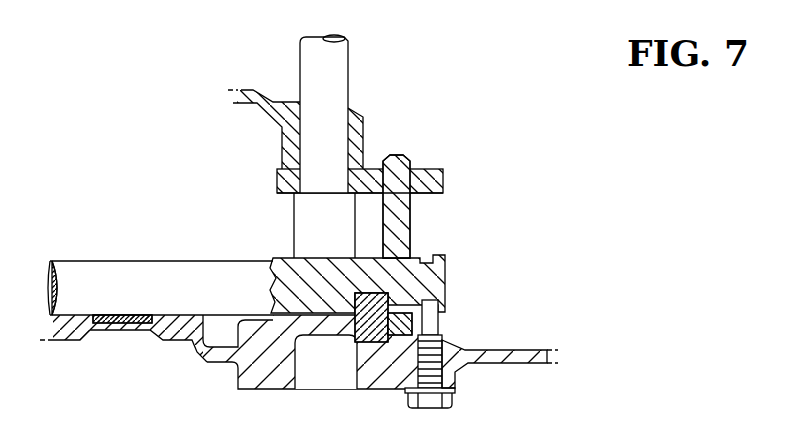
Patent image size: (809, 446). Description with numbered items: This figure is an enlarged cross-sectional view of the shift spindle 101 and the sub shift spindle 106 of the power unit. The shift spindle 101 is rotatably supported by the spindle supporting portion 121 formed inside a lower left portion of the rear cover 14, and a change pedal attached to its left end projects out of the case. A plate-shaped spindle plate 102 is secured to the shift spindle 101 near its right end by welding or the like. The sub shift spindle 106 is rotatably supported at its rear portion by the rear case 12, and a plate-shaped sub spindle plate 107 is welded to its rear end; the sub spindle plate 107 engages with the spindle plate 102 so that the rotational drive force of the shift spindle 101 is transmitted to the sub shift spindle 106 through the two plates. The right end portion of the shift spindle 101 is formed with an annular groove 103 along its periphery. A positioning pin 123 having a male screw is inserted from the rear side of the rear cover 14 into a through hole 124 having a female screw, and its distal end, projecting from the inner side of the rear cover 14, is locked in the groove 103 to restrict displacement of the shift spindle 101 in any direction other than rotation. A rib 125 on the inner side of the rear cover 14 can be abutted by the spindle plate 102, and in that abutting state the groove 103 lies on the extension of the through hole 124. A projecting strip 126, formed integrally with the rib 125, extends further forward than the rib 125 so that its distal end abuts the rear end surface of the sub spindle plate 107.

The rear case 12 is at (282, 133).
The rear cover 14 is at (272, 378).
The shift spindle 101 is at (108, 267).
The spindle plate 102 is at (412, 208).
The groove 103 is at (428, 258).
The sub shift spindle 106 is at (340, 52).
The sub spindle plate 107 is at (440, 167).
The spindle supporting portion 121 is at (110, 333).
The positioning pin 123 is at (434, 331).
The through hole 124 is at (453, 367).
The rib 125 is at (377, 332).
The projecting strip 126 is at (305, 223).